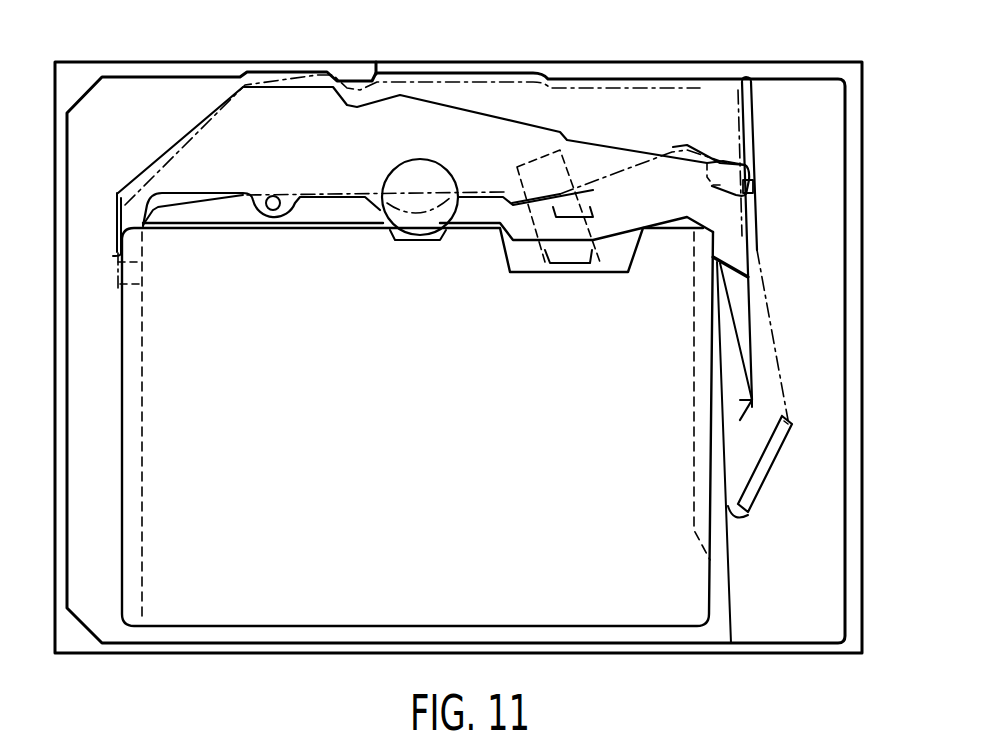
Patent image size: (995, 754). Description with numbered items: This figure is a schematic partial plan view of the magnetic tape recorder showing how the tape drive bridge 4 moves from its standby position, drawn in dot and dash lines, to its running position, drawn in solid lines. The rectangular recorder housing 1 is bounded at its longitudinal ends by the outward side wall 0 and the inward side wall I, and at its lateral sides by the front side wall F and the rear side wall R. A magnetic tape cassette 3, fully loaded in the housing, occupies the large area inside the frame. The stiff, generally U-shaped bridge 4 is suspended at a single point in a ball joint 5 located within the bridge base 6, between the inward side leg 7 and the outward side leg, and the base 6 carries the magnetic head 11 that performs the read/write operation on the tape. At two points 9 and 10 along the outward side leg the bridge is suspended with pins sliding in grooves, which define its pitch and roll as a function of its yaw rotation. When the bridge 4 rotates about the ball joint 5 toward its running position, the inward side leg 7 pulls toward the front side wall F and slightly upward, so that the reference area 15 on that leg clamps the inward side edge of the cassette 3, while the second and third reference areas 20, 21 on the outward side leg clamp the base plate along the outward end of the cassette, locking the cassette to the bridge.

The outward side wall 0 is at (868, 340).
The recorder housing 1 is at (270, 662).
The magnetic tape cassette 3 is at (416, 350).
The tape drive bridge 4 is at (573, 84).
The ball joint 5 is at (278, 196).
The bridge base 6 is at (356, 141).
The inward side leg 7 is at (113, 195).
The pin and groove connection 9 is at (774, 481).
The pin and groove connection 10 is at (760, 149).
The magnetic head 11 is at (590, 274).
The reference area 15 is at (113, 252).
The second reference area 20 is at (722, 252).
The third reference area 21 is at (736, 522).
The front side wall F is at (424, 60).
The inward side wall I is at (46, 353).
The rear side wall R is at (535, 659).